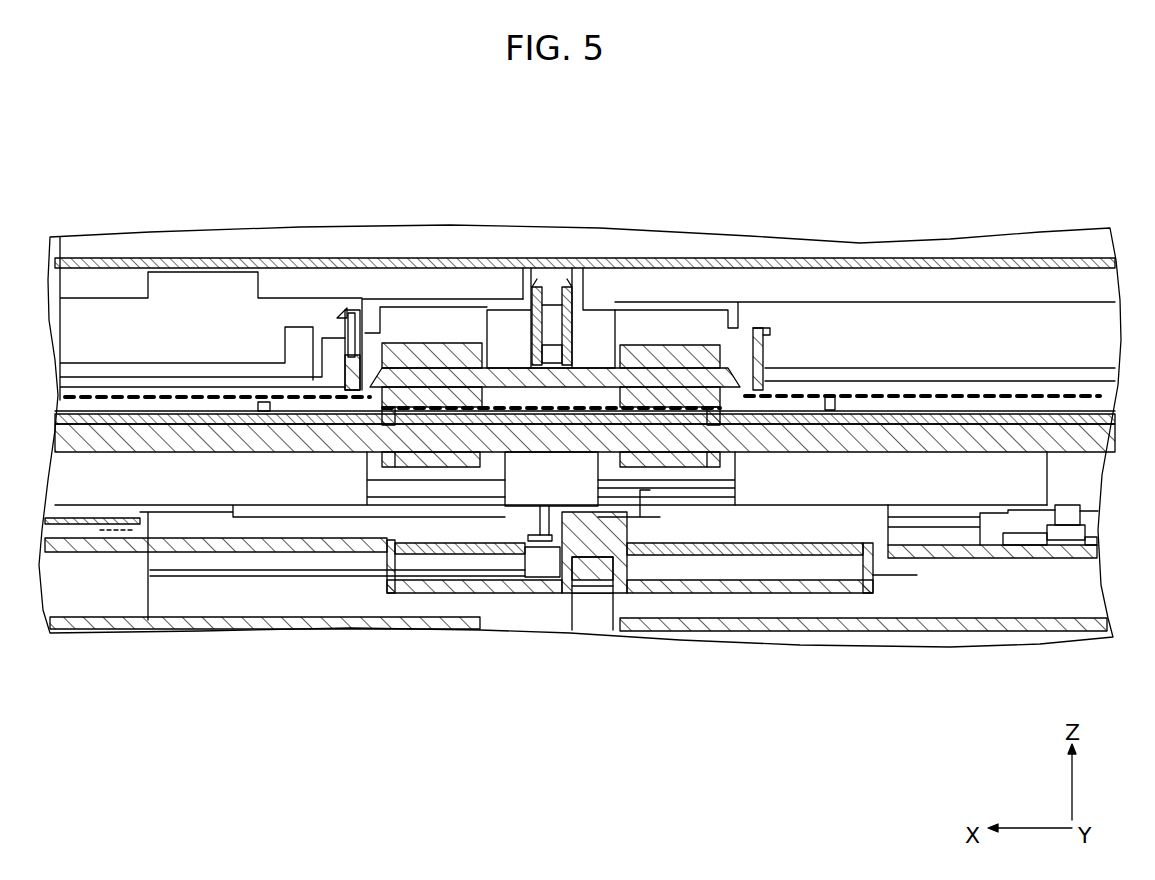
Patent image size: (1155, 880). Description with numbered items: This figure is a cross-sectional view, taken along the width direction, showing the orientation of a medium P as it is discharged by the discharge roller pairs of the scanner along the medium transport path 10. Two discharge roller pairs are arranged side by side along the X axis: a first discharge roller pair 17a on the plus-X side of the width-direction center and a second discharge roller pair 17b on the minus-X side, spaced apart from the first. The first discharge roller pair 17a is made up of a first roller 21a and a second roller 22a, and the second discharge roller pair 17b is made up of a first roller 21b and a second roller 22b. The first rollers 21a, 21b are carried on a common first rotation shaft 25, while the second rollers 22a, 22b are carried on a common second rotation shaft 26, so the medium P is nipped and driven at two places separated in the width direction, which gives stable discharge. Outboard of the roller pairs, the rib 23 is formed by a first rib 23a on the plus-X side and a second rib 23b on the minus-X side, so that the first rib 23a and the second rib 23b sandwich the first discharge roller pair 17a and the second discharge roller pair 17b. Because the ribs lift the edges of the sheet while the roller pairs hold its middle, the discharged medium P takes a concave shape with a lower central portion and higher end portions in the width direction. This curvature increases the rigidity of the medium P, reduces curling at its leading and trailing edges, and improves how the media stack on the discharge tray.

The medium transport path 10 is at (62, 380).
The medium P is at (165, 382).
The rib 23 is at (741, 402).
The first rib 23a is at (263, 410).
The second rib 23b is at (829, 400).
The first rotation shaft 25 is at (598, 440).
The second rotation shaft 26 is at (505, 365).
The first discharge roller pair 17a is at (471, 166).
The first roller 21a is at (410, 366).
The second roller 22a is at (443, 343).
The second discharge roller pair 17b is at (721, 153).
The first roller 21b is at (637, 440).
The second roller 22b is at (682, 345).